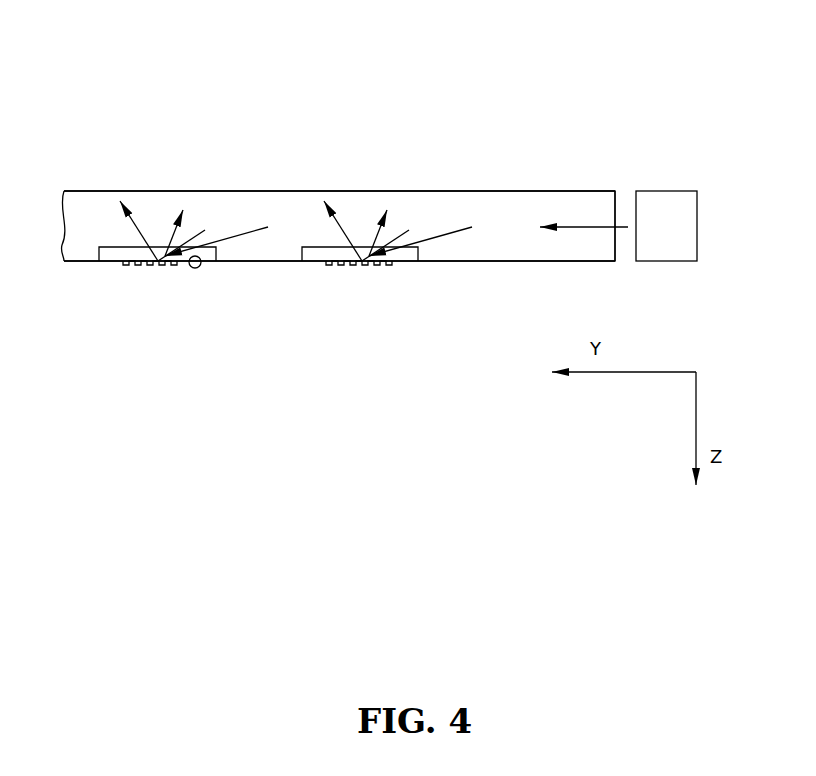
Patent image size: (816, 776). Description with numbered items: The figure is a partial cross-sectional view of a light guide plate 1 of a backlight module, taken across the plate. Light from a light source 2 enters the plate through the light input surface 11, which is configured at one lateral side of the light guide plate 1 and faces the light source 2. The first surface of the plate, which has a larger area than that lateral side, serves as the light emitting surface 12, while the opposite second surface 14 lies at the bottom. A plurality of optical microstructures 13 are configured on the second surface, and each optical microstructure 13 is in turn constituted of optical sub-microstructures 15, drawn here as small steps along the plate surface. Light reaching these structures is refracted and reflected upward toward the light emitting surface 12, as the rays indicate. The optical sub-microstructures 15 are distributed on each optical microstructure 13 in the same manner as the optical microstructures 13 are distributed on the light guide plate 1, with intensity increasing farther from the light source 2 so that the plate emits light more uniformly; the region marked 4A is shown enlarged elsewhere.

The light guide plate 1 is at (518, 205).
The light source 2 is at (670, 208).
The light input surface 11 is at (615, 210).
The light emitting surface 12 is at (442, 190).
The optical microstructures 13 is at (313, 252).
The bottom surface 14 is at (477, 262).
The optical sub-microstructures 15 is at (345, 262).
The reference point 4A is at (195, 268).